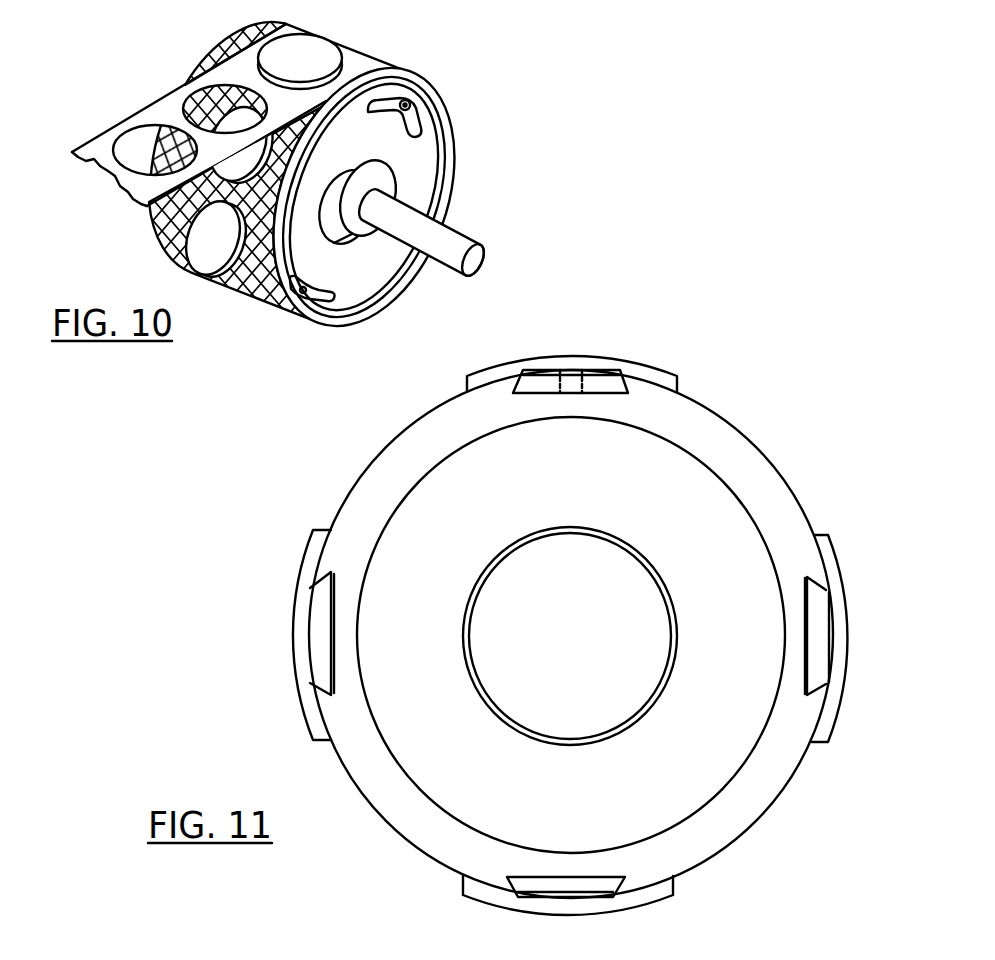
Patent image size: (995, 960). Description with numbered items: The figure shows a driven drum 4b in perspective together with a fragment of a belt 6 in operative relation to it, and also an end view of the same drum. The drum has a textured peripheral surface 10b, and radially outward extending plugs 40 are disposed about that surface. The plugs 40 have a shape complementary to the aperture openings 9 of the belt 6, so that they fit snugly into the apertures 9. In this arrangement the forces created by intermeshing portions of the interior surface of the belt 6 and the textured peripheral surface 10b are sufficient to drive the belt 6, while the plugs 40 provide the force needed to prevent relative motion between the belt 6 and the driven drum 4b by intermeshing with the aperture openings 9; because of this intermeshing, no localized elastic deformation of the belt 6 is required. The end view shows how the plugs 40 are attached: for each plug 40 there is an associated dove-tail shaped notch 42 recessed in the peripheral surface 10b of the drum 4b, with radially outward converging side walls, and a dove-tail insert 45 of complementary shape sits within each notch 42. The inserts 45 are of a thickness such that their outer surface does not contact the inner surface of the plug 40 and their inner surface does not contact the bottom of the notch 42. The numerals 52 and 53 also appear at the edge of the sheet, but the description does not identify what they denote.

In FIG. 10, the belt 6 is at (97, 157).
In FIG. 10, the aperture openings 9 is at (217, 88).
In FIG. 10, the plugs 40 is at (310, 50).
In FIG. 11, the plugs 40 is at (597, 383).
In FIG. 10, the driven drum 4b is at (433, 106).
In FIG. 11, the driven drum 4b is at (700, 773).
In FIG. 10, the textured peripheral surface 10b is at (268, 300).
In FIG. 11, the textured peripheral surface 10b is at (745, 440).
In FIG. 11, the dove-tail shaped notch 42 is at (518, 385).
In FIG. 11, the dove-tail inserts 45 is at (586, 372).
In FIG. 11, the element 52 is at (303, 959).
In FIG. 11, the element 53 is at (343, 959).